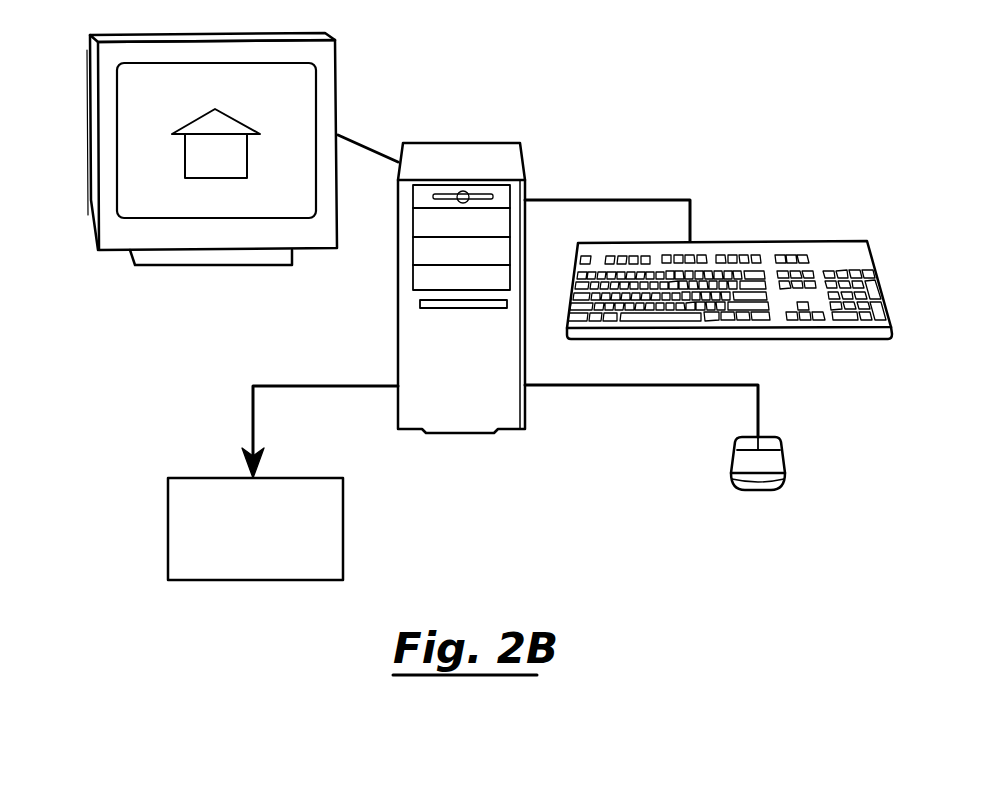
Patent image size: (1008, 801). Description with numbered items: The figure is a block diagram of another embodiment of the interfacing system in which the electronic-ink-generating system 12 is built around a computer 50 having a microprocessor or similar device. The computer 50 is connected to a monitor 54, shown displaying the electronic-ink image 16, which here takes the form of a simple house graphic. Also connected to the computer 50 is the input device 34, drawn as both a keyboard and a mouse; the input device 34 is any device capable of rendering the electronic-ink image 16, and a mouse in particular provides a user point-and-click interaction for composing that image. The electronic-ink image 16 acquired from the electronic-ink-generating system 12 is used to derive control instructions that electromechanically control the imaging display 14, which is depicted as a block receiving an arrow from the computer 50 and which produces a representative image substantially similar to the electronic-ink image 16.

The electronic-ink-generating system 12 is at (661, 92).
The imaging display 14 is at (170, 503).
The electronic-ink image 16 is at (183, 150).
The input device 34 is at (747, 233).
The computer 50 is at (462, 142).
The monitor 54 is at (336, 98).